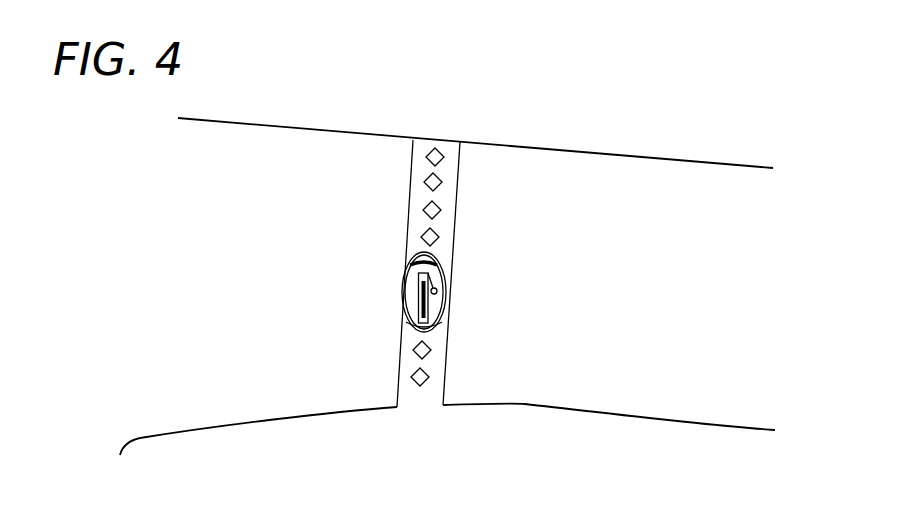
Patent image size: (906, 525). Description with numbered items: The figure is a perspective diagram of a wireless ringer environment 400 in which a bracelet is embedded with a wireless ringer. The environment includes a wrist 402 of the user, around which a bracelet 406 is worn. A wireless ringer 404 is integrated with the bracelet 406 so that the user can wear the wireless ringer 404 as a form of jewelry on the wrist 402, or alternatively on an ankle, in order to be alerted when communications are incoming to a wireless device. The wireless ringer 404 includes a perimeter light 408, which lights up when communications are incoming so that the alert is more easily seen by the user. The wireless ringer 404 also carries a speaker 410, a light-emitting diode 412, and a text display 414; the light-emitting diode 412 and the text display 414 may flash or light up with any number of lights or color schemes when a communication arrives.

The wireless ringer environment 400 is at (590, 43).
The wrist 402 is at (642, 190).
The wireless ringer 404 is at (414, 251).
The bracelet 406 is at (447, 141).
The perimeter light 408 is at (416, 277).
The speaker 410 is at (410, 281).
The light-emitting diode 412 is at (433, 275).
The text display 414 is at (442, 320).